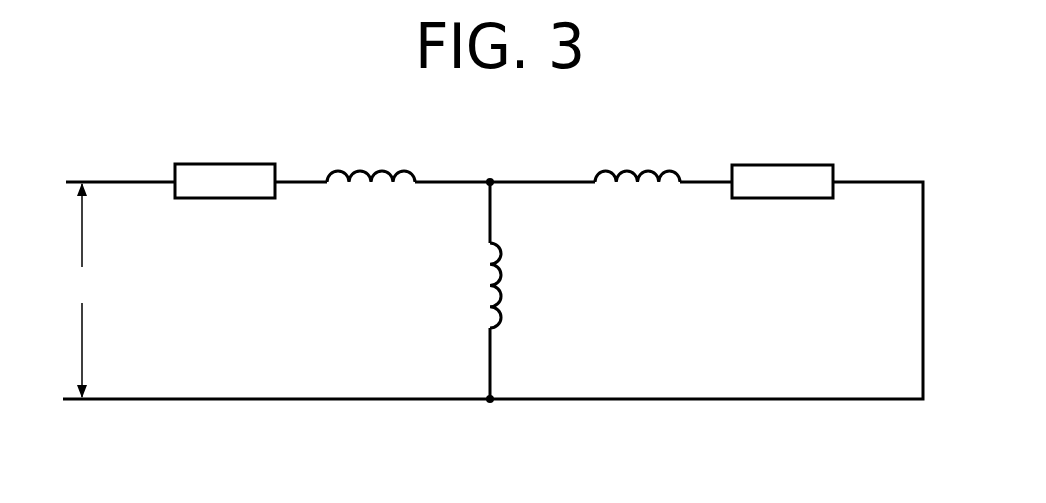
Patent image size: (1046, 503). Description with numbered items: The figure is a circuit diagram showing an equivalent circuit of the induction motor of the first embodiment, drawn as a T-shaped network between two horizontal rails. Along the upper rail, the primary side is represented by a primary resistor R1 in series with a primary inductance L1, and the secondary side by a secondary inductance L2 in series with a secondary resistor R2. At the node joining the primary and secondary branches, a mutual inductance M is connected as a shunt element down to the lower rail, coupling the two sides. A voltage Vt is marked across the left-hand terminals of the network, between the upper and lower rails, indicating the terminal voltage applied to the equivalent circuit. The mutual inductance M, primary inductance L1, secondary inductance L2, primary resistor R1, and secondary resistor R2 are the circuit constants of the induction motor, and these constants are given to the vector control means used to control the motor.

The primary resistor R1 is at (225, 164).
The primary inductance L1 is at (371, 156).
The secondary inductance L2 is at (637, 156).
The secondary resistor R2 is at (782, 164).
The mutual inductance M is at (513, 285).
The terminal voltage Vt is at (82, 290).